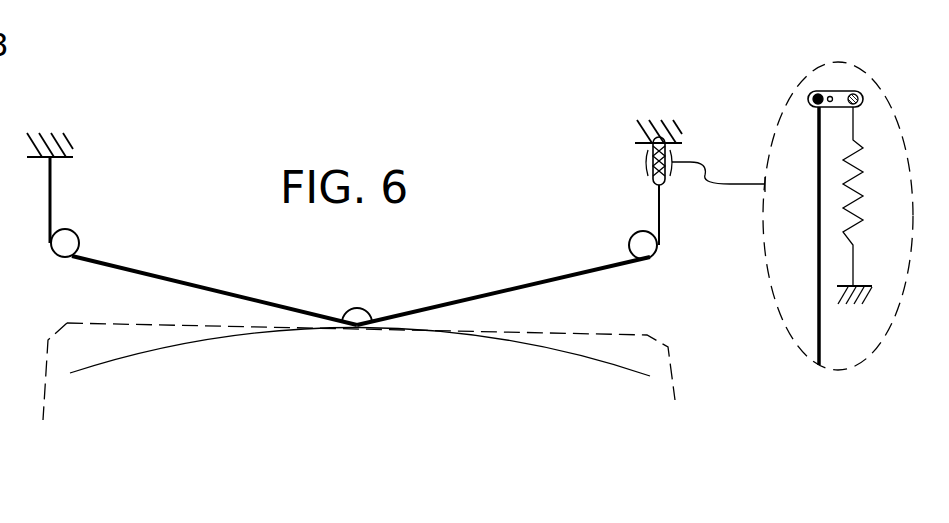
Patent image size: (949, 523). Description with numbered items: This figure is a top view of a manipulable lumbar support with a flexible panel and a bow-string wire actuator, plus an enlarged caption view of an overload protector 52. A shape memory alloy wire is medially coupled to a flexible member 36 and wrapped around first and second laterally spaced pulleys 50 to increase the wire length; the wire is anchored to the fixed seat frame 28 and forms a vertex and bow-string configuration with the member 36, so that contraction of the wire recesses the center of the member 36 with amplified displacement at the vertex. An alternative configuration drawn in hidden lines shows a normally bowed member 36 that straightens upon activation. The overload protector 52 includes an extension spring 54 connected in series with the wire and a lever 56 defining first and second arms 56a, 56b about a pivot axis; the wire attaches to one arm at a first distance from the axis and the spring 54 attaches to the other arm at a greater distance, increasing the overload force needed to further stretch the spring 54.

The seat frame 28 is at (72, 136).
The flexible member 36 is at (238, 336).
The pulleys 50 is at (79, 243).
The overload protector 52 is at (650, 177).
The extension spring 54 is at (855, 218).
The lever 56 is at (809, 108).
The first arm 56a is at (853, 93).
The second arm 56b is at (818, 93).